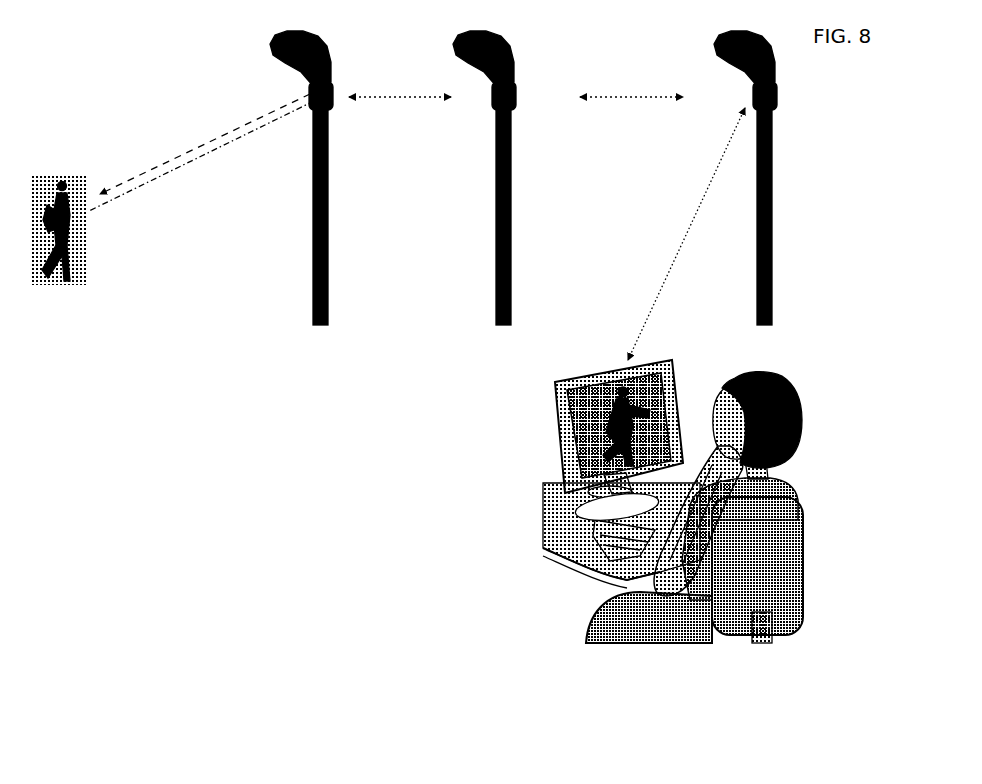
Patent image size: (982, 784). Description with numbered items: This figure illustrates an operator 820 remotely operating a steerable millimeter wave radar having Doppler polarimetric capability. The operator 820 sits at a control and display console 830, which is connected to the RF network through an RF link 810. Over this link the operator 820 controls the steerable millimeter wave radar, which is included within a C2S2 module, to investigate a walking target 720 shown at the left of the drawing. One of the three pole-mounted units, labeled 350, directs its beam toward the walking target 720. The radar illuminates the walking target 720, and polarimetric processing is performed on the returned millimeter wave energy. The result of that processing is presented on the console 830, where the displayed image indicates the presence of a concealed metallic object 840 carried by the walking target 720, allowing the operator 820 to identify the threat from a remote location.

The walking target 720 is at (66, 190).
The camera light fixture 350 is at (332, 98).
The RF link 810 is at (686, 233).
The operator 820 is at (788, 493).
The control and display console 830 is at (591, 426).
The concealed metallic object 840 is at (583, 450).